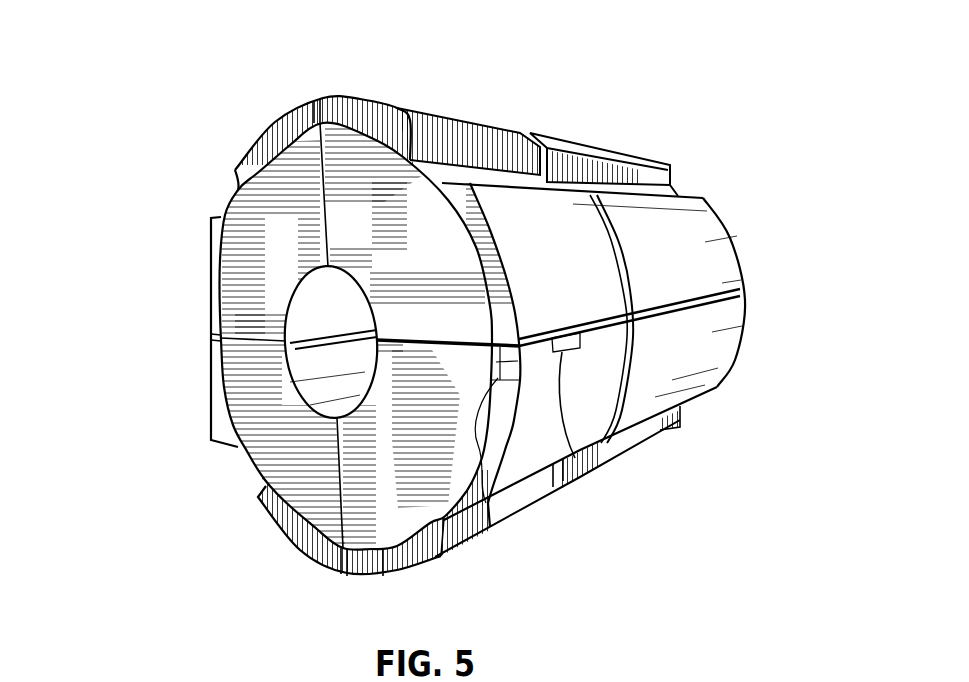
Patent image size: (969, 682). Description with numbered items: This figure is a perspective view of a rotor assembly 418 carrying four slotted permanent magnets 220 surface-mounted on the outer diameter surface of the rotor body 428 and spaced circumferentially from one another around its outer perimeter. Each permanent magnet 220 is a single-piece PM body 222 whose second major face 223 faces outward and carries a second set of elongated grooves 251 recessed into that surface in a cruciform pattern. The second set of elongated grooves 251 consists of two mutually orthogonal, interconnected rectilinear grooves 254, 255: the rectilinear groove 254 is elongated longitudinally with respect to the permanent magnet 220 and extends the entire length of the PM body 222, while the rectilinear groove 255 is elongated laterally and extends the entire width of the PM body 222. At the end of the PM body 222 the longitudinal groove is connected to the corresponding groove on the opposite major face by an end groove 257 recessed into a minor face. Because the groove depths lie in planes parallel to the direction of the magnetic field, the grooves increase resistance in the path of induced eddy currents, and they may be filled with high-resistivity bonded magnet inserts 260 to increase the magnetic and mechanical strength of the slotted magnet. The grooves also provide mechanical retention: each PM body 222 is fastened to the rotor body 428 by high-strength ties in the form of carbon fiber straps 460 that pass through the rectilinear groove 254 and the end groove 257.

The rotor assembly 418 is at (170, 43).
The permanent magnet 220 is at (246, 149).
The carbon fiber strap 460 is at (323, 152).
The rotor body 428 is at (267, 447).
The second major face 223 is at (738, 253).
The bonded magnet insert 260 is at (742, 292).
The second set of elongated grooves 251 is at (690, 352).
The PM body 222 is at (697, 400).
The rectilinear groove 255 is at (655, 415).
The rectilinear groove 254 is at (575, 458).
The end groove 257 is at (477, 440).